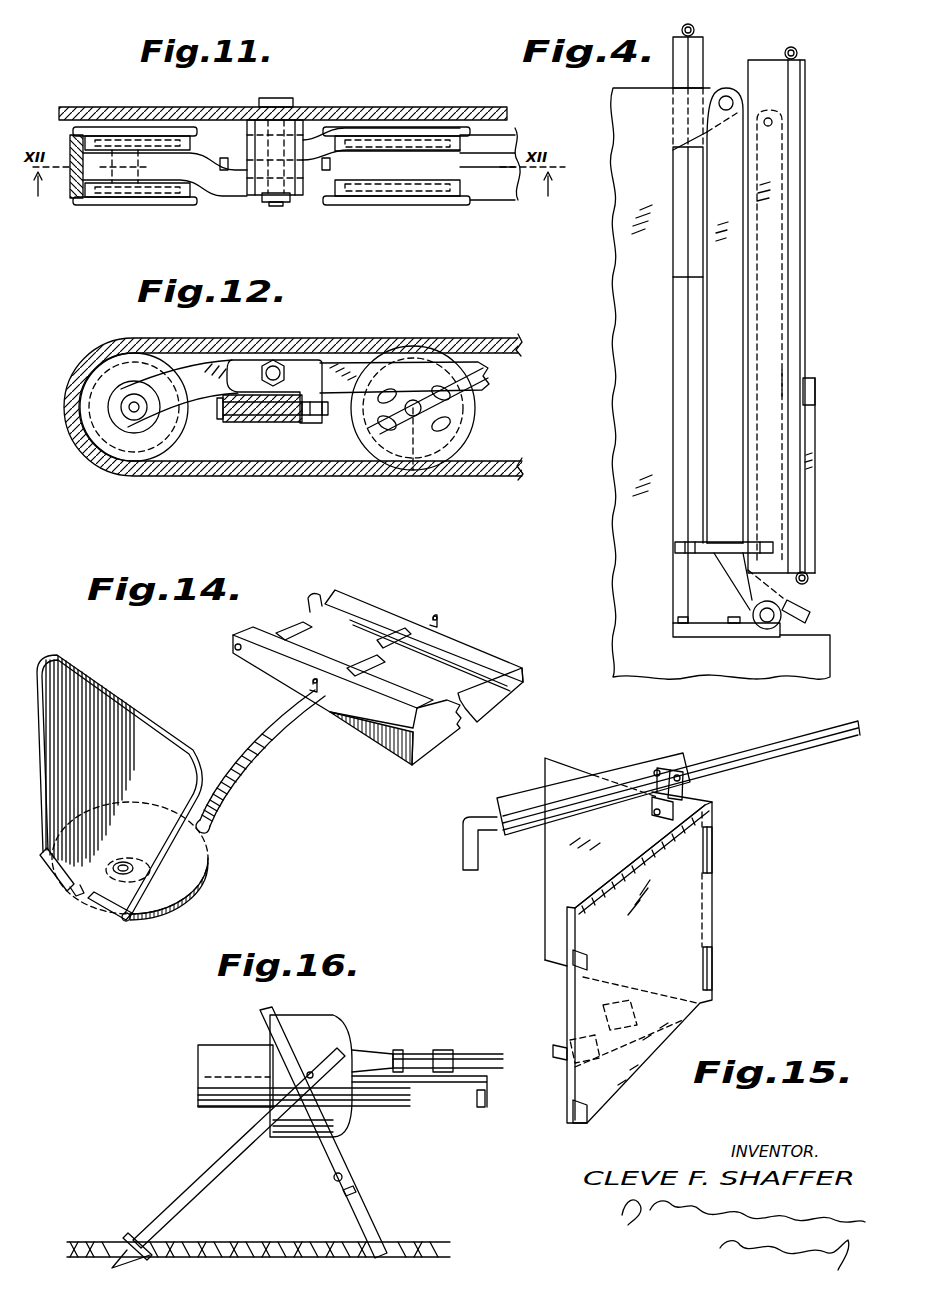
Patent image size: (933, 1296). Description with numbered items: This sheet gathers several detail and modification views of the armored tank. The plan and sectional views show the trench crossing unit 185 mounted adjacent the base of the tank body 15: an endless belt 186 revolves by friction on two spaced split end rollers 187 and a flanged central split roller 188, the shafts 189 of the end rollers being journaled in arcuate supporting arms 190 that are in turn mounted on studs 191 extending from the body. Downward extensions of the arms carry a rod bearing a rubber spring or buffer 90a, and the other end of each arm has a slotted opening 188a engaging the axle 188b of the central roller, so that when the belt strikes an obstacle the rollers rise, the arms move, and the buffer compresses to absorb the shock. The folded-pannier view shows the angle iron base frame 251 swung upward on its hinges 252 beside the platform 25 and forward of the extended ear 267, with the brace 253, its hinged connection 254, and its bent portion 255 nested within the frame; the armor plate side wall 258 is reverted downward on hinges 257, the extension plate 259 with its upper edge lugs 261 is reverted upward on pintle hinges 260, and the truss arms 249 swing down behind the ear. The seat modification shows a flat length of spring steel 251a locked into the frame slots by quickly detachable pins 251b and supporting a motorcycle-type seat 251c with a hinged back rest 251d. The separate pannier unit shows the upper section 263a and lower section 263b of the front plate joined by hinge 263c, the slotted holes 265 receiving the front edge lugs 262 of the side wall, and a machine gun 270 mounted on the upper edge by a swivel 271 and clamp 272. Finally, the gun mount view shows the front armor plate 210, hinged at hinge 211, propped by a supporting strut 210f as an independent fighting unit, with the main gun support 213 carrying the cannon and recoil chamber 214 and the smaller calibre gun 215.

In FIG. 11, the tank body 15 is at (438, 108).
In FIG. 4, the platform 25 is at (722, 640).
In FIG. 11, the rubber spring or buffer 90a is at (300, 180).
In FIG. 12, the rubber spring or buffer 90a is at (254, 422).
In FIG. 12, the trench crossing unit 185 is at (347, 336).
In FIG. 11, the endless belt 186 is at (496, 200).
In FIG. 12, the endless belt 186 is at (486, 340).
In FIG. 11, the split end rollers 187 is at (115, 203).
In FIG. 12, the split end rollers 187 is at (106, 432).
In FIG. 11, the central split roller 188 is at (472, 133).
In FIG. 12, the central split roller 188 is at (474, 430).
In FIG. 12, the slotted opening 188a is at (440, 416).
In FIG. 11, the axle 188b is at (397, 135).
In FIG. 12, the axle 188b is at (413, 414).
In FIG. 11, the shafts 189 is at (148, 170).
In FIG. 12, the shafts 189 is at (134, 416).
In FIG. 11, the arcuate supporting arms 190 is at (218, 196).
In FIG. 12, the arcuate supporting arms 190 is at (200, 364).
In FIG. 11, the studs 191 is at (277, 204).
In FIG. 12, the studs 191 is at (274, 366).
In FIG. 16, the front armor plate 210 is at (348, 1158).
In FIG. 16, the supporting strut 210f is at (212, 1170).
In FIG. 16, the hinge 211 is at (333, 1181).
In FIG. 16, the main gun support 213 is at (307, 1018).
In FIG. 16, the gun or cannon and recoil chamber 214 is at (507, 1028).
In FIG. 16, the smaller calibre gun 215 is at (489, 1085).
In FIG. 4, the truss arms 249 is at (735, 303).
In FIG. 4, the base frame 251 is at (788, 232).
In FIG. 14, the base frame 251 is at (480, 653).
In FIG. 14, the flat length of spring steel 251a is at (228, 800).
In FIG. 14, the quickly detachable pins 251b is at (433, 620).
In FIG. 14, the seat 251c is at (190, 870).
In FIG. 14, the hinged back rest 251d is at (140, 722).
In FIG. 4, the hinges 252 is at (767, 630).
In FIG. 4, the truss or brace 253 is at (783, 380).
In FIG. 4, the hinged connection 254 is at (773, 122).
In FIG. 4, the bent portion 255 is at (812, 618).
In FIG. 4, the hinges 257 is at (798, 52).
In FIG. 4, the armor plate side wall 258 is at (796, 186).
In FIG. 15, the armor plate side wall 258 is at (556, 892).
In FIG. 4, the upward vertical extension plate 259 is at (815, 452).
In FIG. 4, the pintle hinges 260 is at (808, 581).
In FIG. 4, the upper edge lugs 261 is at (815, 393).
In FIG. 15, the front edge lugs 262 is at (712, 853).
In FIG. 4, the upper section of front armor plate 263a is at (678, 350).
In FIG. 15, the upper section of front armor plate 263a is at (639, 962).
In FIG. 4, the lower section of front armor plate 263b is at (692, 258).
In FIG. 15, the lower section of front armor plate 263b is at (559, 1046).
In FIG. 4, the hinge 263c is at (695, 27).
In FIG. 15, the slotted holes 265 is at (709, 825).
In FIG. 4, the extended ear 267 is at (726, 96).
In FIG. 15, the machine gun 270 is at (530, 790).
In FIG. 15, the swivel 271 is at (690, 803).
In FIG. 15, the clamp 272 is at (654, 818).